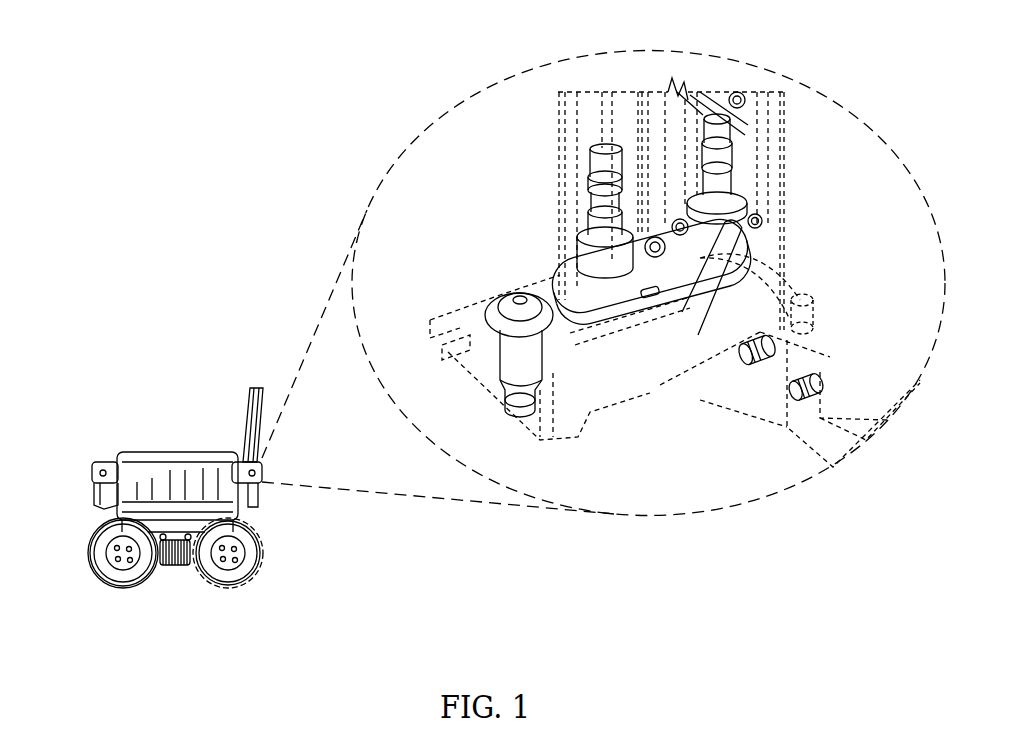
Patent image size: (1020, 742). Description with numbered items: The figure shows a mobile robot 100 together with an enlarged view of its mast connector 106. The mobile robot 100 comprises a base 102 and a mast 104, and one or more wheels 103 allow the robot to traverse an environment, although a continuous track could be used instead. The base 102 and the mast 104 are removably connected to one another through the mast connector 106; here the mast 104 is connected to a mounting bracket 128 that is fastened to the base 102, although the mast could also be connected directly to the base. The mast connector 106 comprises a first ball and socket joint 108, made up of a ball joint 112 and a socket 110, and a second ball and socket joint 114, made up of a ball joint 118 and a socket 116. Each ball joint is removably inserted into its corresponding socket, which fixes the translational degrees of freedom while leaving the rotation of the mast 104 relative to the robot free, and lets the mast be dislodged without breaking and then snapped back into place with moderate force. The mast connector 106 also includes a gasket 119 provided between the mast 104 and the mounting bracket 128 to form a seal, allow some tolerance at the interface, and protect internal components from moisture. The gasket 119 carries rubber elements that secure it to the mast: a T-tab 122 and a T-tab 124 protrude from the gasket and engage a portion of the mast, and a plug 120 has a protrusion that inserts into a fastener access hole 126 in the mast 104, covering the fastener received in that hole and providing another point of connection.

The mobile robot 100 is at (90, 390).
The base 102 is at (173, 430).
The wheels 103 is at (222, 598).
The mast 104 is at (255, 380).
The mast connector 106 is at (268, 457).
The first ball and socket joint 108 is at (570, 250).
The socket 110 is at (602, 268).
The ball joint 112 is at (625, 222).
The second ball and socket joint 114 is at (762, 221).
The socket 116 is at (752, 213).
The ball joint 118 is at (742, 203).
The gasket 119 is at (538, 283).
The plug 120 is at (700, 283).
The T-tab 122 is at (652, 295).
The T-tab 124 is at (805, 300).
The fastener access hole 126 is at (700, 233).
The mounting bracket 128 is at (840, 338).